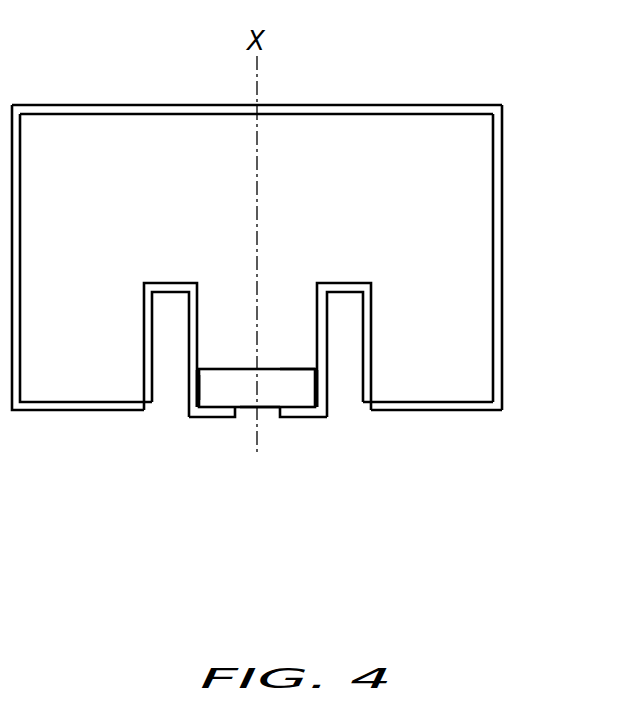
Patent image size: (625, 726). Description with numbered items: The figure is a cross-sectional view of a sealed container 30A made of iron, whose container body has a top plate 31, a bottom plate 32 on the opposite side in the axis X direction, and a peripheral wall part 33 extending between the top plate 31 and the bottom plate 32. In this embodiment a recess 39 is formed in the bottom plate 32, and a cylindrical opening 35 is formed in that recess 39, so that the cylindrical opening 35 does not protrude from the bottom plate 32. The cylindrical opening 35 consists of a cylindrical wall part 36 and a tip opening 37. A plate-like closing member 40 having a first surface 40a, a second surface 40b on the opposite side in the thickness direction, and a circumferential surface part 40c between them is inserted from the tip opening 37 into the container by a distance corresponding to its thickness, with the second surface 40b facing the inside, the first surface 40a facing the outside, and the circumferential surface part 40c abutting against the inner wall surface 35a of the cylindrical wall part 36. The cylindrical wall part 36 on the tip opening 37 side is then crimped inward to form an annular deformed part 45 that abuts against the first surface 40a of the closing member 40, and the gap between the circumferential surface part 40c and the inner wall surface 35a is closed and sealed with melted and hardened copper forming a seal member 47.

The sealed container 30A is at (297, 289).
The top plate 31 is at (143, 104).
The bottom plate 32 is at (444, 411).
The peripheral wall part 33 is at (503, 230).
The cylindrical opening 35 is at (253, 368).
The inner wall surface 35a is at (200, 292).
The cylindrical wall part 36 is at (322, 393).
The tip opening 37 is at (302, 454).
The recess 39 is at (362, 331).
The closing member 40 is at (190, 428).
The first surface 40a is at (264, 411).
The second surface 40b is at (284, 368).
The circumferential surface part 40c is at (227, 387).
The annular deformed part 45 is at (216, 414).
The seal member 47 is at (197, 395).